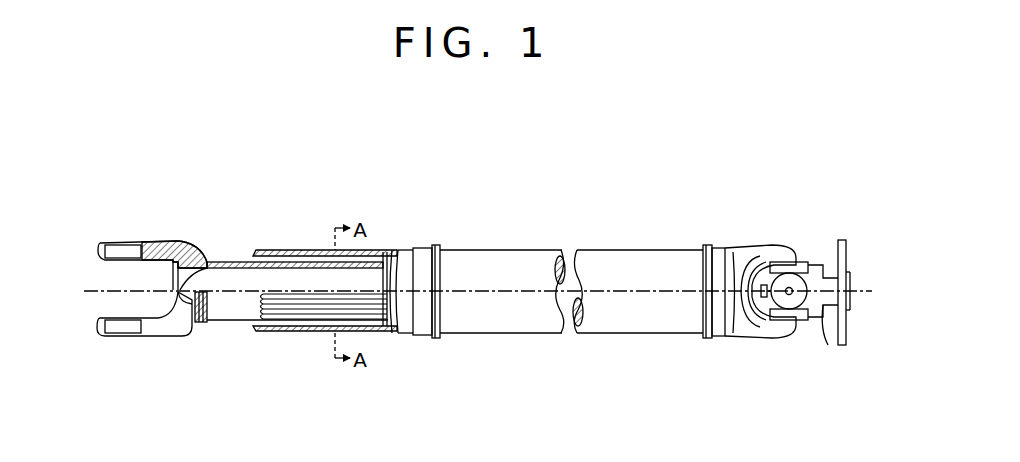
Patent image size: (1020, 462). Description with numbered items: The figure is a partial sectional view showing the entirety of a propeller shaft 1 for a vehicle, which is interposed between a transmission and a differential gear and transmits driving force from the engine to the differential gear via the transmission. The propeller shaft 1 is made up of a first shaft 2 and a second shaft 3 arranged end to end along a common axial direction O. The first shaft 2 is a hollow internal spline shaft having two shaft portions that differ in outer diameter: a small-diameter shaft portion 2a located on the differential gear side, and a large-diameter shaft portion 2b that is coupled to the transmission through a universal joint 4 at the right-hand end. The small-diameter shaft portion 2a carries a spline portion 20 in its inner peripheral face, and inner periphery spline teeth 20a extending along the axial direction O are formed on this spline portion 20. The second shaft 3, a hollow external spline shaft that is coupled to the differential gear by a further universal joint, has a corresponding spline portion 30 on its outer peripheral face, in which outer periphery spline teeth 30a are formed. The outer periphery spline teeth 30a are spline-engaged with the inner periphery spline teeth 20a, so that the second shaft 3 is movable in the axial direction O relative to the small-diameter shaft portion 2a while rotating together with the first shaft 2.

The propeller shaft 1 is at (624, 189).
The first shaft 2 is at (413, 403).
The small-diameter shaft portion 2a is at (406, 340).
The large-diameter shaft portion 2b is at (529, 340).
The second shaft 3 is at (225, 330).
The universal joint 4 is at (817, 337).
The spline portion 20 is at (285, 332).
The inner periphery spline teeth 20a is at (390, 250).
The spline portion 30 is at (238, 262).
The outer periphery spline teeth 30a is at (283, 250).
The axial direction O is at (100, 290).